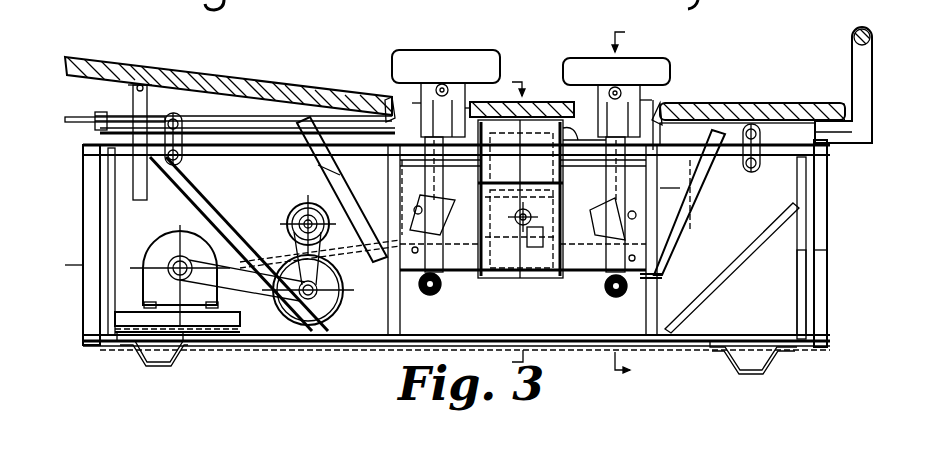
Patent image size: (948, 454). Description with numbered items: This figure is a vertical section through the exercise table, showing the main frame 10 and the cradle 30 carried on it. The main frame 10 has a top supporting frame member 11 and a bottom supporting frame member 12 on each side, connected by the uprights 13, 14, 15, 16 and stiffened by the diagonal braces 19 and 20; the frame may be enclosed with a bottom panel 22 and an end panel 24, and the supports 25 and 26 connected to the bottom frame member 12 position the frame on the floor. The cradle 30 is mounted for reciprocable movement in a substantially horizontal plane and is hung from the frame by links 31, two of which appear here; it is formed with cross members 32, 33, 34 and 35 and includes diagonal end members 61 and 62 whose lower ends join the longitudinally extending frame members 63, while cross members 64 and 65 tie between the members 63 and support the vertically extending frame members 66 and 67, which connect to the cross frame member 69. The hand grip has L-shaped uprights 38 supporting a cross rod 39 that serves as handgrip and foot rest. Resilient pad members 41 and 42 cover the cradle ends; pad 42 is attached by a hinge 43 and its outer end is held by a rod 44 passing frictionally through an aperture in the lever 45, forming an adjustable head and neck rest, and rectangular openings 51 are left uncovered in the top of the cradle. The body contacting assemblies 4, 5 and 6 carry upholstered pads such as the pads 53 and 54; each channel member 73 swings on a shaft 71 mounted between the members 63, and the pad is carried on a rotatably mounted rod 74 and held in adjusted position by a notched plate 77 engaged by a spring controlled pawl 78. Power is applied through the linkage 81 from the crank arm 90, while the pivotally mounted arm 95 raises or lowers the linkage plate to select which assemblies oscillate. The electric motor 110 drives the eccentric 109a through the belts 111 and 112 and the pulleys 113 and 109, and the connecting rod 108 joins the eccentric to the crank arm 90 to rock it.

The body contacting assembly 4 is at (288, 219).
The body contacting assembly 5 is at (629, 200).
The body contacting assembly 6 is at (378, 178).
The main frame 10 is at (795, 206).
The top supporting frame member 11 is at (265, 168).
The bottom supporting frame member 12 is at (492, 335).
The upright 13 is at (115, 224).
The upright 14 is at (388, 317).
The upright 15 is at (646, 317).
The upright 16 is at (797, 307).
The diagonal brace 19 is at (737, 261).
The diagonal brace 20 is at (210, 226).
The bottom panel 22 is at (277, 342).
The end panel 24 is at (827, 281).
The support 25 is at (155, 366).
The support 26 is at (755, 376).
The cradle 30 is at (746, 197).
The link 31 is at (183, 124).
The cross member 32 is at (380, 128).
The cross member 33 is at (663, 134).
The cross member 34 is at (822, 134).
The cross member 35 is at (93, 115).
The L-shaped upright 38 is at (874, 78).
The cross rod 39 is at (872, 35).
The pad member 41 is at (785, 102).
The pad member 42 is at (268, 76).
The hinge 43 is at (389, 97).
The rod 44 is at (133, 96).
The lever 45 is at (65, 120).
The rectangular opening 51 is at (466, 108).
The pad 53 is at (459, 50).
The pad 54 is at (653, 58).
The diagonal end member 61 is at (326, 176).
The diagonal end member 62 is at (688, 221).
The longitudinally extending frame member 63 is at (466, 278).
The cross member 64 is at (440, 256).
The cross member 65 is at (570, 250).
The vertically extending frame member 66 is at (480, 177).
The vertically extending frame member 67 is at (564, 181).
The cross frame member 69 is at (584, 132).
The shaft 71 is at (440, 293).
The channel member 73 is at (527, 250).
The rod 74 is at (436, 90).
The notched plate 77 is at (527, 98).
The spring controlled pawl 78 is at (425, 172).
The linkage 81 is at (600, 208).
The crank arm 90 is at (532, 217).
The pivotally mounted arm 95 is at (380, 173).
The connecting rod 108 is at (372, 248).
The pulley 109 is at (294, 207).
The eccentric 109a is at (334, 192).
The electric motor 110 is at (152, 257).
The belt 111 is at (255, 300).
The belt 112 is at (290, 249).
The pulley 113 is at (332, 283).